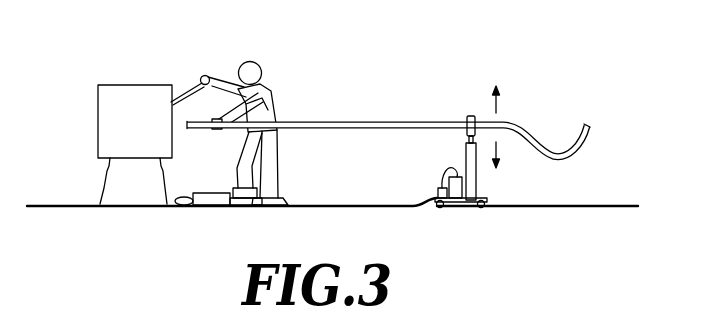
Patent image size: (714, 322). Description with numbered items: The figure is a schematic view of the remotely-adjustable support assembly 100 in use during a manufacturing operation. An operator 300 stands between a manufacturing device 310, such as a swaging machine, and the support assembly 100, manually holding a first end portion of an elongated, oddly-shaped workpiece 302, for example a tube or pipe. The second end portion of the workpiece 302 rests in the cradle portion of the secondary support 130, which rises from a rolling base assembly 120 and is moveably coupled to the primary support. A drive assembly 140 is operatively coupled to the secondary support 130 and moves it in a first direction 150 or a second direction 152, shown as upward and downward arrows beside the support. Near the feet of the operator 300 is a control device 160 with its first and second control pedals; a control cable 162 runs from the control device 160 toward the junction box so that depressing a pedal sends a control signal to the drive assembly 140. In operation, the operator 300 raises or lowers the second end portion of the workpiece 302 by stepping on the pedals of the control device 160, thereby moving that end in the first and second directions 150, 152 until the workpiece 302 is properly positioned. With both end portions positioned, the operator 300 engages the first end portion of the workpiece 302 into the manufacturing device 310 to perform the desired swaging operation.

The remotely-adjustable support assembly 100 is at (447, 69).
The base assembly 120 is at (495, 184).
The secondary support 130 is at (441, 141).
The drive assembly 140 is at (429, 173).
The first direction 150 is at (498, 110).
The second direction 152 is at (497, 146).
The control device 160 is at (209, 177).
The control cable 162 is at (338, 204).
The operator 300 is at (274, 95).
The workpiece 302 is at (338, 121).
The manufacturing device 310 is at (122, 85).